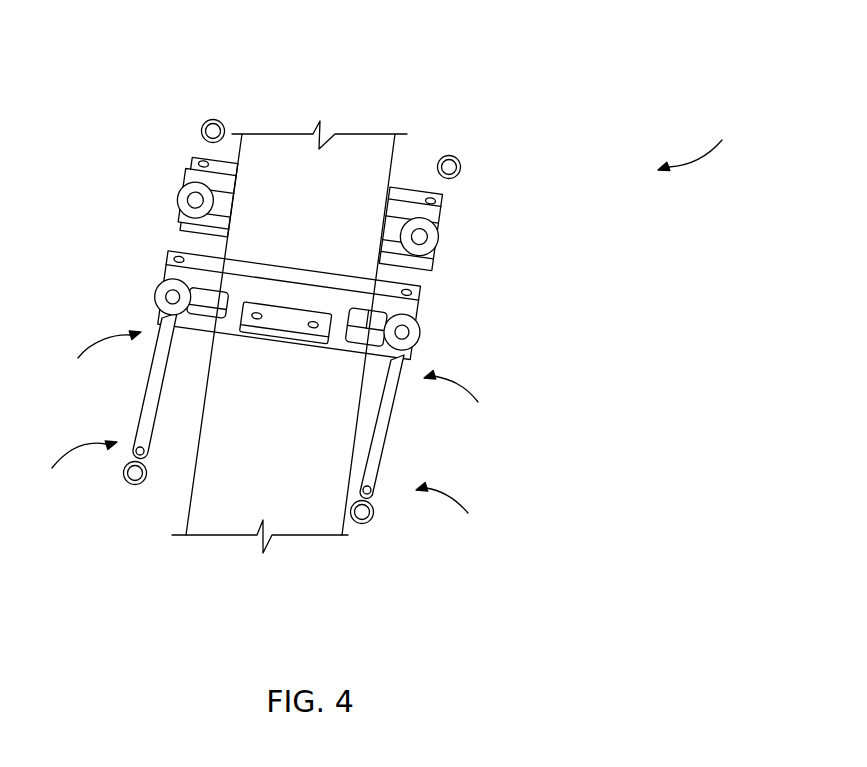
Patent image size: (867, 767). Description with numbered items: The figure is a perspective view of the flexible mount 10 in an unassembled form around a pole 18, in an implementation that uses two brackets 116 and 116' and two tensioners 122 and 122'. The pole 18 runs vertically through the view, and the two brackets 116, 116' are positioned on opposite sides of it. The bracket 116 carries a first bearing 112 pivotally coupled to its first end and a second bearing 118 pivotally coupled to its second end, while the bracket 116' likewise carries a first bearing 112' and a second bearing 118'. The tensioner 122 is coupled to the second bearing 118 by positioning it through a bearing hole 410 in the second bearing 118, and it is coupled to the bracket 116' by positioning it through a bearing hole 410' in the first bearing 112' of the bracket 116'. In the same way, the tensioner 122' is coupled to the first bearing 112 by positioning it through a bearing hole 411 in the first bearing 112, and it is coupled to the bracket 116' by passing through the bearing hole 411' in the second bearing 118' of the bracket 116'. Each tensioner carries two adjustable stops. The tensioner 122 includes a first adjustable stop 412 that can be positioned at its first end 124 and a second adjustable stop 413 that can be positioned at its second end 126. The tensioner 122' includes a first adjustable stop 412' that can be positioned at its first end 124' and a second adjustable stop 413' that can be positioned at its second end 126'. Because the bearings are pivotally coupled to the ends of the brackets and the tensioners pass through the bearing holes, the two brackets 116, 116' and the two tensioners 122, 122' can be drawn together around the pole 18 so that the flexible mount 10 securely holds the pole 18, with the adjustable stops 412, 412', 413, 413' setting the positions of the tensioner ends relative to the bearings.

The flexible mount 10 is at (699, 143).
The pole 18 is at (338, 145).
The bracket 116 is at (228, 291).
The bracket 116' is at (422, 170).
The first bearing 112 is at (150, 294).
The first bearing 112' is at (453, 233).
The second bearing 118 is at (422, 325).
The second bearing 118' is at (190, 188).
The bearing hole 410 is at (430, 334).
The bearing hole 410' is at (454, 237).
The bearing hole 411 is at (144, 298).
The bearing hole 411' is at (131, 186).
The first adjustable stop 412 is at (355, 544).
The first adjustable stop 412' is at (175, 125).
The second adjustable stop 413 is at (485, 160).
The second adjustable stop 413' is at (125, 505).
The tensioner 122 is at (410, 427).
The tensioner 122' is at (119, 386).
The first end 124 is at (460, 515).
The first end 124' is at (95, 359).
The second end 126 is at (467, 403).
The second end 126' is at (72, 469).